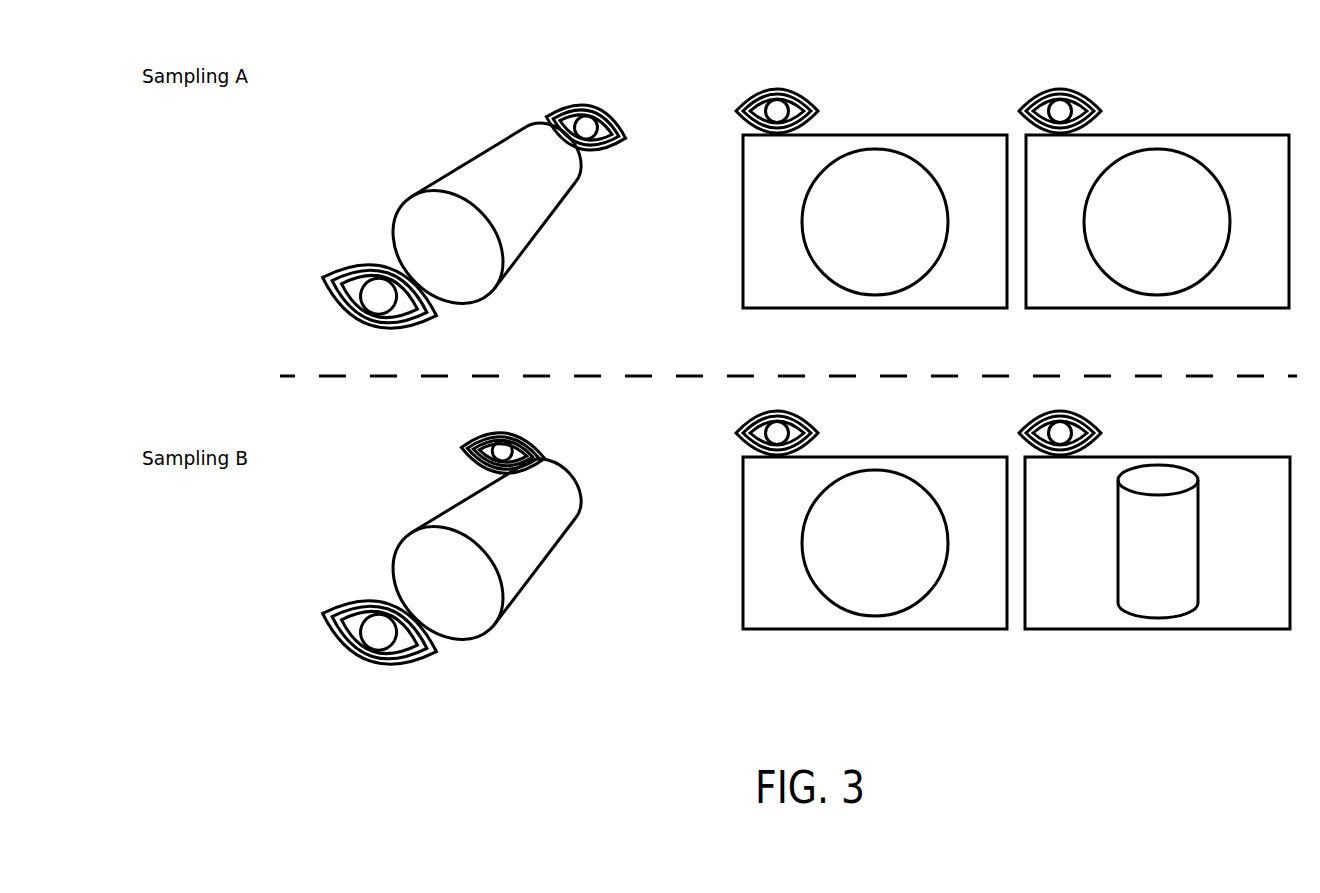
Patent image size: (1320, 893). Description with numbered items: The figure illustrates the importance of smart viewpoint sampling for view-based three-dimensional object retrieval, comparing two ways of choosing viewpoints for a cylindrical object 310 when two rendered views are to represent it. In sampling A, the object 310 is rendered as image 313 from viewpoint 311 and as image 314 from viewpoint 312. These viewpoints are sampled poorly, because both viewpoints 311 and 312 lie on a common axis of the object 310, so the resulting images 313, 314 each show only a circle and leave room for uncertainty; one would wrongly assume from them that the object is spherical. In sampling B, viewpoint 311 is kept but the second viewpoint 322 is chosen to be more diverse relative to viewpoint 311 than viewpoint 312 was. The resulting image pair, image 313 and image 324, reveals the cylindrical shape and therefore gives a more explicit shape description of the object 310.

The object 310 is at (472, 167).
The viewpoint 311 is at (345, 262).
The viewpoint 312 is at (573, 98).
The image 313 is at (896, 135).
The image 314 is at (1202, 135).
The viewpoint 322 is at (472, 432).
The image 324 is at (1187, 457).